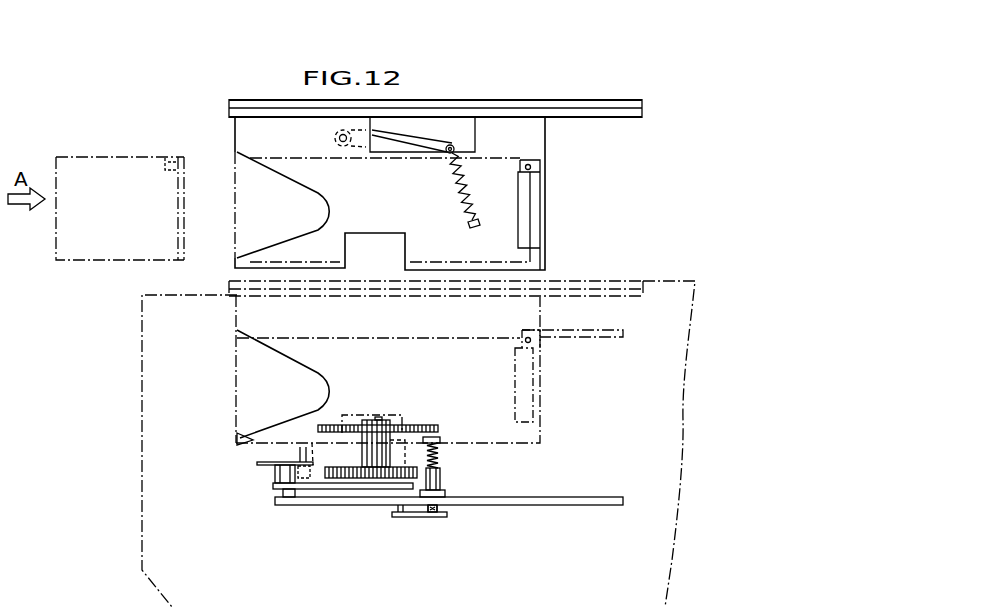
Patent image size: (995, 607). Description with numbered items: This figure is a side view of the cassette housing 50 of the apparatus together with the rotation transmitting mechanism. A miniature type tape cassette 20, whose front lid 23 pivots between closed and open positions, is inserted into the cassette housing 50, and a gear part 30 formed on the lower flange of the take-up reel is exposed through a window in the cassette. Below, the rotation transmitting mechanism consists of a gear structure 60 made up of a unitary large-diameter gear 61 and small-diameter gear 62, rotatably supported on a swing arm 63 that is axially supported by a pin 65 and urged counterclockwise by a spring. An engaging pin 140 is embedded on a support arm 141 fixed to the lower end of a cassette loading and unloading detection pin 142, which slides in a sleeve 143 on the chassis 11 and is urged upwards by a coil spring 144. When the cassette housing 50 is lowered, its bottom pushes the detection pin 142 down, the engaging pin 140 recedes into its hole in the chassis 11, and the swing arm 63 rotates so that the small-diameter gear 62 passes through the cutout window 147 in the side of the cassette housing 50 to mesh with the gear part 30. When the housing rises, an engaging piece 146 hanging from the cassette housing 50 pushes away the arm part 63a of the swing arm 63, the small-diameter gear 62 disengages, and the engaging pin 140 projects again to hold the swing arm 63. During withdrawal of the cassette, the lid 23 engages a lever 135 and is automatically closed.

The chassis 11 is at (543, 506).
The tape cassette 20 is at (133, 162).
The lid 23 is at (585, 339).
The gear part 30 is at (347, 423).
The cassette housing 50 is at (531, 99).
The gear structure 60 is at (401, 457).
The large-diameter gear 61 is at (357, 490).
The small-diameter gear 62 is at (385, 421).
The swing arm 63 is at (322, 486).
The arm part 63a is at (312, 443).
The pin 65 is at (277, 474).
The lever 135 is at (390, 155).
The engaging pin 140 is at (395, 513).
The support arm 141 is at (419, 518).
The cassette loading and unloading detection pin 142 is at (437, 438).
The sleeve 143 is at (441, 481).
The coil spring 144 is at (438, 459).
The engaging piece 146 is at (307, 471).
The cutout window 147 is at (405, 245).